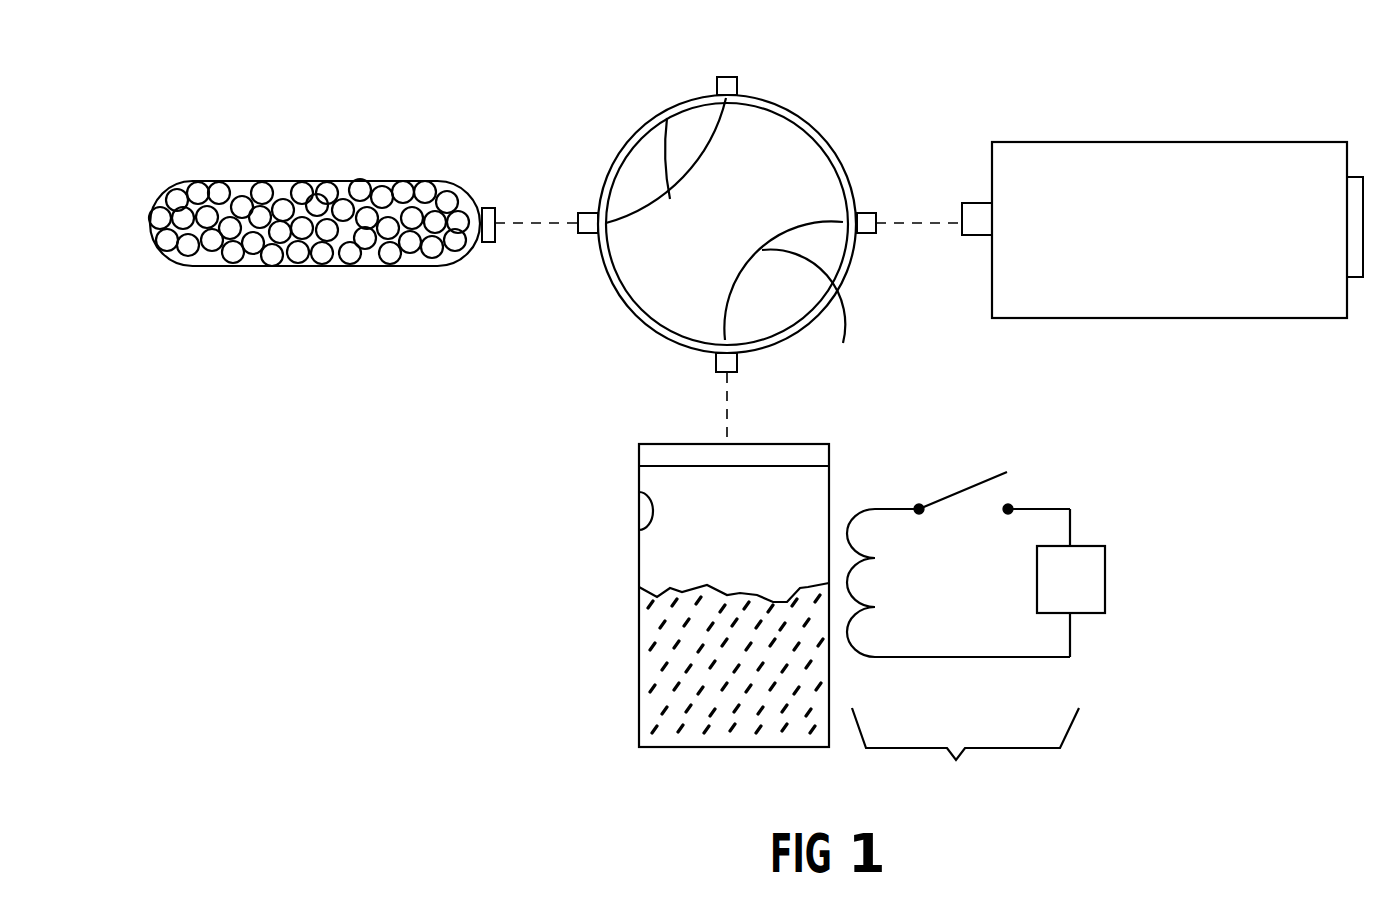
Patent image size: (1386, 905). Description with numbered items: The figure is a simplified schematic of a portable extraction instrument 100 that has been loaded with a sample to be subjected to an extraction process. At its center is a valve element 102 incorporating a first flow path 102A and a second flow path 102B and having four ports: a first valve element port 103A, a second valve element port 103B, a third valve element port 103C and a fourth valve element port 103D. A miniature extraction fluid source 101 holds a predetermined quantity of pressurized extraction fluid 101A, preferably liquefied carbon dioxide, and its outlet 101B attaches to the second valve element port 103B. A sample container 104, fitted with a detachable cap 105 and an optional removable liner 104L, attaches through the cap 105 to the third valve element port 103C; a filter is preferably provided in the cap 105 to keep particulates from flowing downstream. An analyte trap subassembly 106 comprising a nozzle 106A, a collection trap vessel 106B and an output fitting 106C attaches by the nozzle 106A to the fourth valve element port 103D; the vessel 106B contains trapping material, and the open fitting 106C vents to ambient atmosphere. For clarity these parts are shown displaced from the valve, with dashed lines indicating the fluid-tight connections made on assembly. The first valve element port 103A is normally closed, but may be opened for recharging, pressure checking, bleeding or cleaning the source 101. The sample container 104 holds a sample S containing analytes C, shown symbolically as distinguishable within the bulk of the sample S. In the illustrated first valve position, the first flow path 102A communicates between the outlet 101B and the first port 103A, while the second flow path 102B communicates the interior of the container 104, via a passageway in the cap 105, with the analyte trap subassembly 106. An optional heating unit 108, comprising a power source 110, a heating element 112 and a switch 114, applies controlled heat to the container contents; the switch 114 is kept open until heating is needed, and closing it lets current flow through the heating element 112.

The portable extraction instrument 100 is at (333, 71).
The extraction fluid source 101 is at (322, 240).
The pressurized extraction fluid 101A is at (242, 183).
The outlet 101B is at (483, 245).
The valve element 102 is at (738, 209).
The first flow path 102A is at (667, 120).
The second flow path 102B is at (815, 308).
The first valve element port 103A is at (736, 78).
The second valve element port 103B is at (592, 244).
The third valve element port 103C is at (737, 364).
The fourth valve element port 103D is at (872, 213).
The sample container 104 is at (643, 627).
The removable liner 104L is at (641, 527).
The detachable cap 105 is at (638, 452).
The analyte trap subassembly 106 is at (1132, 210).
The nozzle 106A is at (978, 237).
The collection trap vessel 106B is at (1227, 318).
The output fitting 106C is at (1350, 170).
The heating unit 108 is at (1015, 597).
The power source 110 is at (1105, 567).
The heating element 112 is at (875, 657).
The switch 114 is at (965, 472).
The analytes C is at (682, 703).
The sample S is at (725, 738).